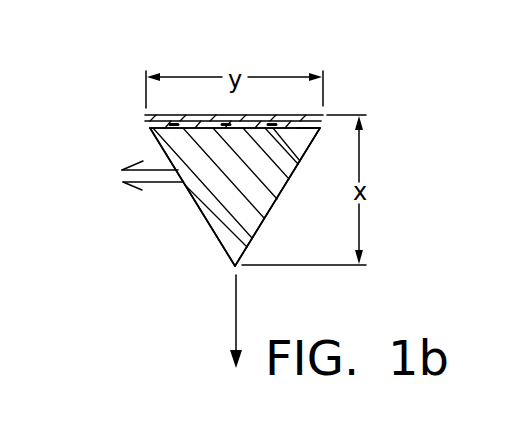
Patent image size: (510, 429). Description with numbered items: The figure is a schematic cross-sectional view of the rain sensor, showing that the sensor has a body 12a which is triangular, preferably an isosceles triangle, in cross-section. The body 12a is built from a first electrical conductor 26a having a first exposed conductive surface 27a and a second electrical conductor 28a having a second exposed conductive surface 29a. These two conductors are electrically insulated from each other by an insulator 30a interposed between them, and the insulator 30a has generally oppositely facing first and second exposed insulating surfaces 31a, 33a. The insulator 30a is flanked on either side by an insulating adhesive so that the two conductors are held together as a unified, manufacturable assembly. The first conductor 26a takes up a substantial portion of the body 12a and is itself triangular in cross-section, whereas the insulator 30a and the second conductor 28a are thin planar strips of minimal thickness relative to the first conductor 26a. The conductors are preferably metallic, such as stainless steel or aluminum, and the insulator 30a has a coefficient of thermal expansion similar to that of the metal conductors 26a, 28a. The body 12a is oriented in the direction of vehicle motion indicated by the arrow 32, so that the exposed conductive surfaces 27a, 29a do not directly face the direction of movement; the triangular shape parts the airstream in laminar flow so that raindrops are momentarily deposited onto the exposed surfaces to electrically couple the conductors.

The body 12a is at (116, 83).
The first electrical conductor 26a is at (213, 177).
The first exposed conductive surface 27a is at (205, 218).
The second electrical conductor 28a is at (308, 116).
The second exposed conductive surface 29a is at (147, 118).
The insulator 30a is at (297, 168).
The first exposed insulating surface 31a is at (150, 128).
The arrow 32 is at (236, 303).
The second exposed insulating surface 33a is at (302, 129).